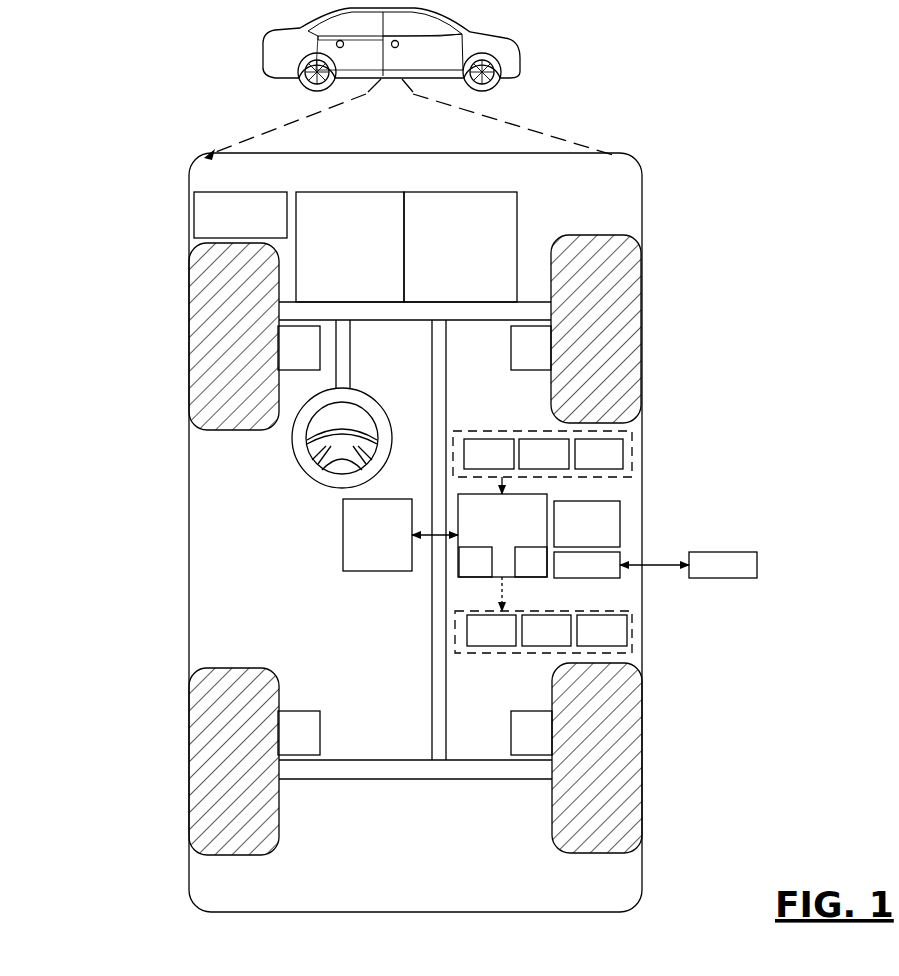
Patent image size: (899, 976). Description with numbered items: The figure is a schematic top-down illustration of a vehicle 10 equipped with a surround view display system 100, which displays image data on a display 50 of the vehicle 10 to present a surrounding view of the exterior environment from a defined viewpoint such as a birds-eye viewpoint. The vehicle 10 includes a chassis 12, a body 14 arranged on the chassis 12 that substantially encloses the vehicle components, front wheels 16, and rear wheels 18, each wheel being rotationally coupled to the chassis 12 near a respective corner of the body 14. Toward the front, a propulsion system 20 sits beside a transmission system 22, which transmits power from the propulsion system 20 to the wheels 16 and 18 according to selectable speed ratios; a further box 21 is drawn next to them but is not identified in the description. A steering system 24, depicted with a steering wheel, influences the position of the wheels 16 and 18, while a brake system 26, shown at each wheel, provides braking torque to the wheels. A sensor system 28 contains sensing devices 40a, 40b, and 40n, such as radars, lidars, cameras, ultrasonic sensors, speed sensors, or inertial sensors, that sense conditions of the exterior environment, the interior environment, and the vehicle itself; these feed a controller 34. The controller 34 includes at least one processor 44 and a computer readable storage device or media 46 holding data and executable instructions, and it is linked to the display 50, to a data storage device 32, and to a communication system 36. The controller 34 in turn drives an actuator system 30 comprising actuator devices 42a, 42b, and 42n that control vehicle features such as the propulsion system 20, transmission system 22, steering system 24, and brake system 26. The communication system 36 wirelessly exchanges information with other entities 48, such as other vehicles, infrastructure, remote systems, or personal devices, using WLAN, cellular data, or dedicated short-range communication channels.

The vehicle 10 is at (265, 60).
The surround view display system 100 is at (798, 110).
The chassis 12 is at (432, 678).
The body 14 is at (189, 517).
The front wheels 16 is at (578, 235).
The rear wheels 18 is at (250, 856).
The propulsion system 20 is at (350, 247).
The battery 21 is at (240, 215).
The transmission system 22 is at (460, 247).
The steering system 24 is at (375, 346).
The brake system 26 is at (415, 540).
The sensor system 28 is at (542, 430).
The actuator system 30 is at (543, 653).
The data storage device 32 is at (587, 524).
The controller 34 is at (502, 535).
The communication system 36 is at (587, 565).
The sensing device 40a is at (489, 454).
The sensing device 40b is at (544, 454).
The sensing device 40n is at (599, 454).
The actuator device 42a is at (491, 630).
The actuator device 42b is at (546, 630).
The actuator device 42n is at (602, 630).
The processor 44 is at (475, 562).
The computer readable storage device or media 46 is at (531, 562).
The other entities 48 is at (723, 565).
The display 50 is at (377, 535).